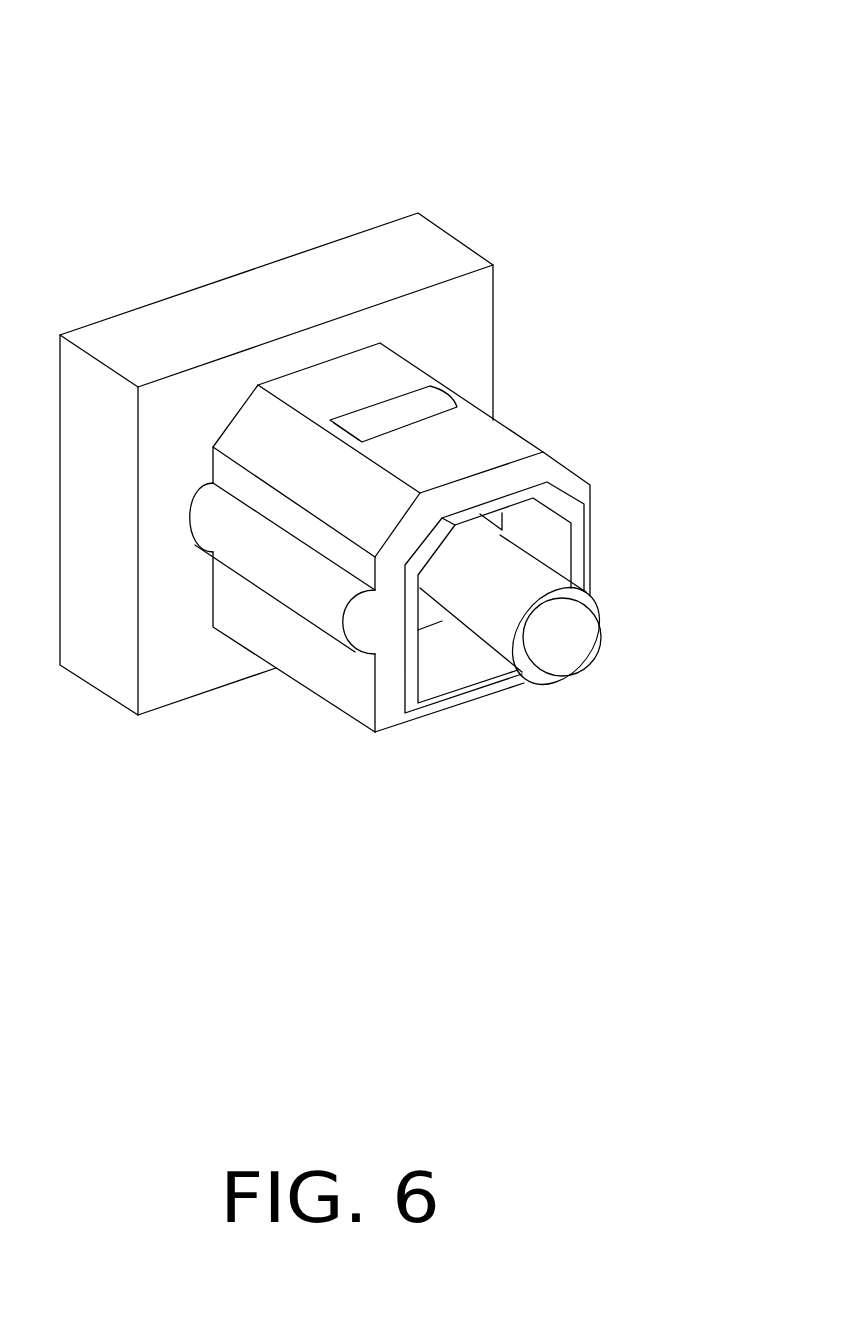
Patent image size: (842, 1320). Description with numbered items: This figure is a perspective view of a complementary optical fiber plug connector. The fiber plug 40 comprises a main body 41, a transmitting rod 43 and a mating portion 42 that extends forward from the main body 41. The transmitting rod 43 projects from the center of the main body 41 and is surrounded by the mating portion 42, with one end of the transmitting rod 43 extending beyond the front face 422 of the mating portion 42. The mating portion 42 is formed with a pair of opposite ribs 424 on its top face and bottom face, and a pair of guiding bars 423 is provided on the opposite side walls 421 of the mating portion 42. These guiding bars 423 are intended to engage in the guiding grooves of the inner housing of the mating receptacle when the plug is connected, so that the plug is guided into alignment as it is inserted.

The fiber plug 40 is at (278, 45).
The main body 41 is at (362, 270).
The mating portion 42 is at (488, 438).
The side walls 421 is at (312, 660).
The front face 422 is at (386, 683).
The guiding bars 423 is at (288, 562).
The ribs 424 is at (398, 410).
The transmitting rod 43 is at (568, 642).